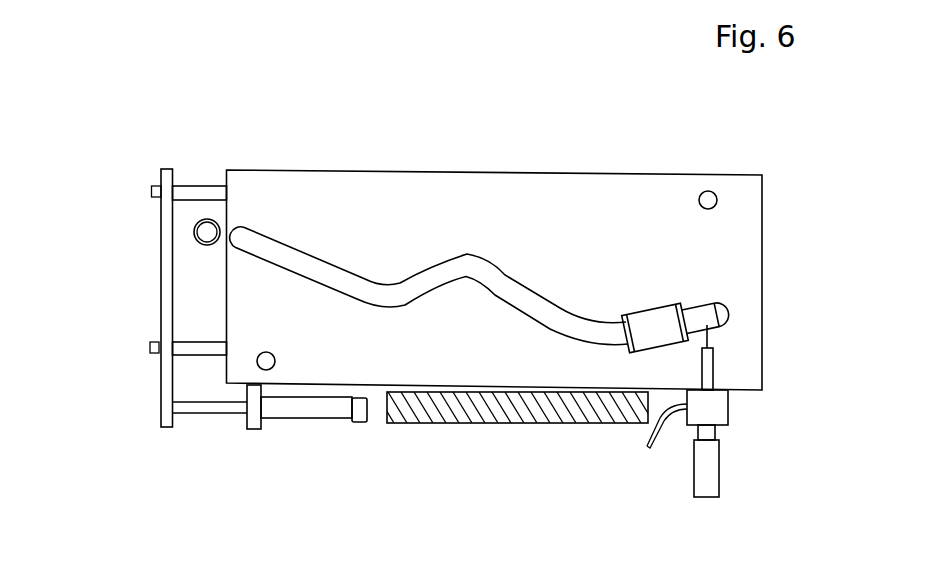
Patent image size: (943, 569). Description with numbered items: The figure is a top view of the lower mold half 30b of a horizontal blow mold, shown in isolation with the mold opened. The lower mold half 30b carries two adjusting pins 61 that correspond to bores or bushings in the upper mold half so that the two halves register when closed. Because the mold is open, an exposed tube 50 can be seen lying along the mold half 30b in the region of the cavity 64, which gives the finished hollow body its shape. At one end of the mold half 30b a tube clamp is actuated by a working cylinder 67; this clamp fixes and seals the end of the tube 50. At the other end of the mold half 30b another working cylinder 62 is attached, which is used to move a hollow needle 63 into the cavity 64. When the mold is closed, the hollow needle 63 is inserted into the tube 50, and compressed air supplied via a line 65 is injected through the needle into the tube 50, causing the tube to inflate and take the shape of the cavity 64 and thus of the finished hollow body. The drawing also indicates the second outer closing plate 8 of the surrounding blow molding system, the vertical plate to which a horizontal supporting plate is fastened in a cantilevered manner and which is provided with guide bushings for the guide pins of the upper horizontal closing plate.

The lower mold half 30b is at (488, 210).
The tube 50 is at (207, 232).
The adjusting pins 61 is at (708, 199).
The cavity 64 is at (520, 292).
The hollow needle 63 is at (700, 333).
The working cylinder 62 is at (702, 475).
The line 65 is at (647, 452).
The working cylinder 67 is at (327, 408).
The second outer closing plate 8 is at (467, 413).